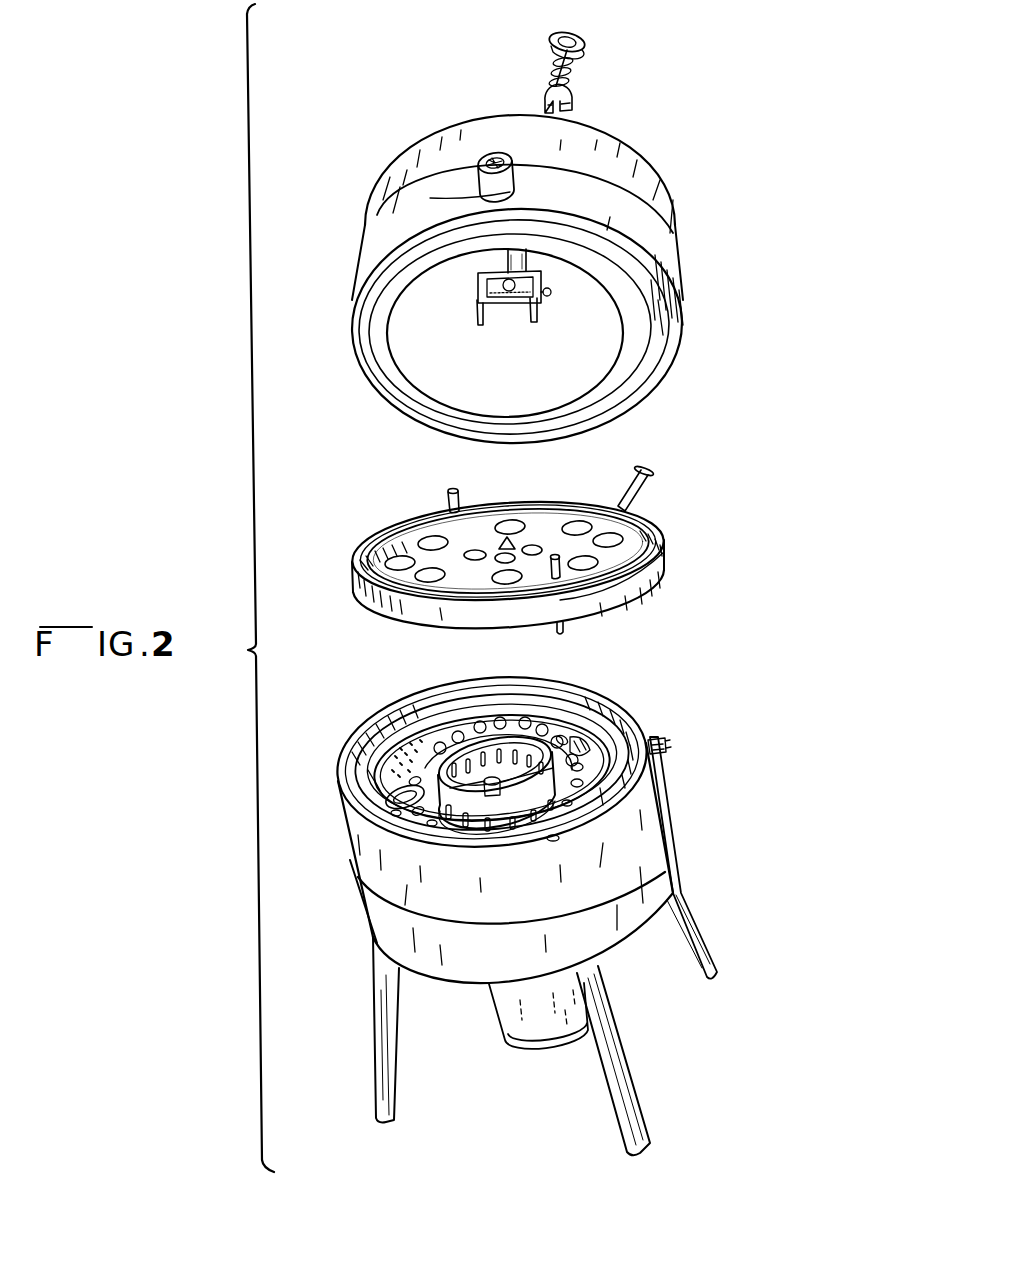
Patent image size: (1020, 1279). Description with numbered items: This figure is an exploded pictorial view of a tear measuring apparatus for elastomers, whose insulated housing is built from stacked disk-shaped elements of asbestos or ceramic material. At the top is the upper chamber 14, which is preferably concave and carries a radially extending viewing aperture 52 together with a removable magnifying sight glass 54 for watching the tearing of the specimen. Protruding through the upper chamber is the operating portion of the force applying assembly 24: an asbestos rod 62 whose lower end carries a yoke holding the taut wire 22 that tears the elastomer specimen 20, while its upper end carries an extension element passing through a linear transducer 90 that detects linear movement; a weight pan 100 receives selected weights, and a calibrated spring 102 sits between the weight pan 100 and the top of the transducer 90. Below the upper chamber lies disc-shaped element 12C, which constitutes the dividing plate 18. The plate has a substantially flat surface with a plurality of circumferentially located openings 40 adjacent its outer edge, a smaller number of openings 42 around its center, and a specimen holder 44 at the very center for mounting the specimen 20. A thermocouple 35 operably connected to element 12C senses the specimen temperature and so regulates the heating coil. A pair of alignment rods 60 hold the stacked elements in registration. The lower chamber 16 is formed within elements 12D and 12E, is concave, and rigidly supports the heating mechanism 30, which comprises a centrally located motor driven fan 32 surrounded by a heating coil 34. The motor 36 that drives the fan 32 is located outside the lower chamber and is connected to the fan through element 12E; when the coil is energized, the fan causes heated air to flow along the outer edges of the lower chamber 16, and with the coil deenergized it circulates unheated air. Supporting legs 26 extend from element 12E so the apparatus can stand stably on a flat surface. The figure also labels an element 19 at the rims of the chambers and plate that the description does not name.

The upper chamber 14 is at (443, 331).
The sealing rim / gasket 19 is at (637, 386).
The magnifying sight glass 54 is at (495, 153).
The viewing aperture 52 is at (513, 192).
The weight pan 100 is at (580, 40).
The calibrated spring 102 is at (573, 72).
The linear transducer 90 is at (547, 88).
The force applying assembly 24 is at (598, 97).
The rod 62 is at (507, 257).
The taut wire 22 is at (503, 308).
The dividing plate 18 is at (686, 571).
The disc-shaped element 12C is at (667, 557).
The elastomer specimen 20 is at (500, 545).
The openings 40 is at (538, 521).
The openings 42 is at (470, 553).
The specimen holder 44 is at (523, 540).
The thermocouple 35 is at (640, 492).
The alignment rods 60 is at (563, 627).
The disc-shaped element 12D is at (640, 813).
The disc-shaped element 12E is at (653, 878).
The lower chamber 16 is at (428, 728).
The heating mechanism 30 is at (512, 708).
The fan 32 is at (477, 807).
The heating coil 34 is at (577, 790).
The motor 36 is at (512, 1017).
The supporting legs 26 is at (613, 1107).